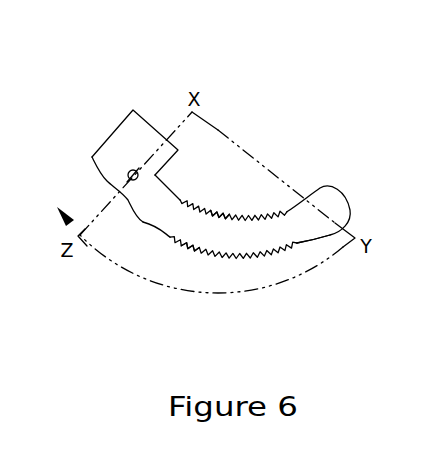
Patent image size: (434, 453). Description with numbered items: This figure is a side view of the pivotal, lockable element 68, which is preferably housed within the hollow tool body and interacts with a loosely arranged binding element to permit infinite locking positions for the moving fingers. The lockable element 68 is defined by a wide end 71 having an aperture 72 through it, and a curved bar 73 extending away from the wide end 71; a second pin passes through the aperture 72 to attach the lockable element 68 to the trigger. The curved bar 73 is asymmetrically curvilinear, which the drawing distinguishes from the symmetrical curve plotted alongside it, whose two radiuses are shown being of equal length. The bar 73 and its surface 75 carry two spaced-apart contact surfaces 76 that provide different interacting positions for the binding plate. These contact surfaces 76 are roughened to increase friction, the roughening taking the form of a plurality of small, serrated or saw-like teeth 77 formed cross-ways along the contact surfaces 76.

The lockable element 68 is at (326, 200).
The wide end 71 is at (130, 125).
The aperture 72 is at (129, 170).
The curved bar 73 is at (150, 223).
The surface 75 is at (247, 235).
The contact surfaces 76 is at (252, 212).
The teeth 77 is at (220, 212).